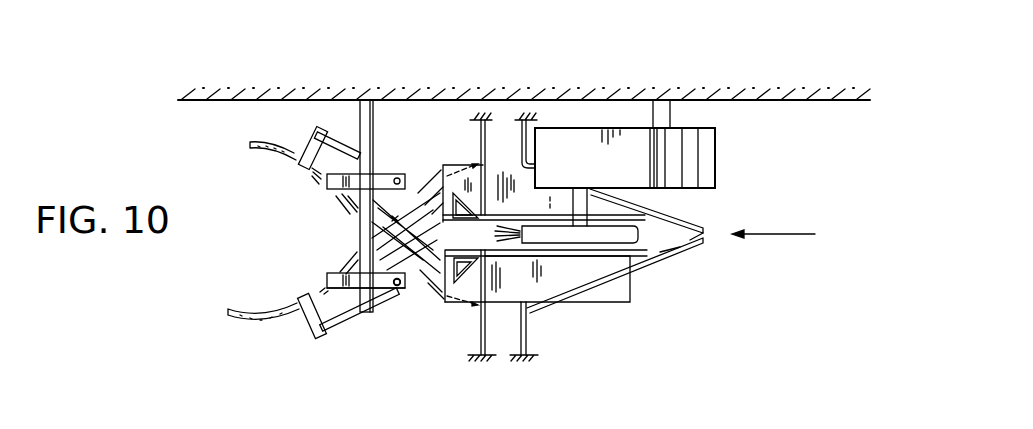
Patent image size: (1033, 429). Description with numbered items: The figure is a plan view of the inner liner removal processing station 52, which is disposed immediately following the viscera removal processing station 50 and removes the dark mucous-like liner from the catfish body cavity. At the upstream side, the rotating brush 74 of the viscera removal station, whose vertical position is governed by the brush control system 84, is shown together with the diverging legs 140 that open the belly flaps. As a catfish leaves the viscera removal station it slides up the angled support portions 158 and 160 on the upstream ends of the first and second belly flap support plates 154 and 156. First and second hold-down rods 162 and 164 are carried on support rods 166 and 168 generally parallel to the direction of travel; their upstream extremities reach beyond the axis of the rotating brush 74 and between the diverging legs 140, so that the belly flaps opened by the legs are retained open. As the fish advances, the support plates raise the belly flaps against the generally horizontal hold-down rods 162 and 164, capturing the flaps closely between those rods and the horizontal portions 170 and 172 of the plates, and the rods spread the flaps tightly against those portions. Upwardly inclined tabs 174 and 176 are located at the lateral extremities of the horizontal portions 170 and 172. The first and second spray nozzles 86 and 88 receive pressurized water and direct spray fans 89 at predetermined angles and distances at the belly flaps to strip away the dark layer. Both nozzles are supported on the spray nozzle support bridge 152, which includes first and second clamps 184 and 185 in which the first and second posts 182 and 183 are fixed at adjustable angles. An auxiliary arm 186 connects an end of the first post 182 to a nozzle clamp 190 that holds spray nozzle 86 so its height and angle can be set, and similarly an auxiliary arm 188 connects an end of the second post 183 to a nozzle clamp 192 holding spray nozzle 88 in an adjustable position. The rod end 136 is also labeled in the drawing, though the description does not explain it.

The viscera removal processing station 50 is at (652, 84).
The inner liner removal processing station 52 is at (418, 85).
The rotating brush 74 is at (663, 218).
The brush control system 84 is at (643, 148).
The first spray nozzle 86 is at (320, 295).
The second spray nozzle 88 is at (313, 174).
The spray fan 89 is at (402, 291).
The upper guide rod 136 is at (697, 245).
The diverging legs 140 is at (667, 253).
The spray nozzle support bridge 152 is at (357, 118).
The first belly flap support plate 154 is at (503, 305).
The second belly flap support plate 156 is at (503, 168).
The angled support portion 158 is at (597, 305).
The angled support portion 160 is at (558, 205).
The first hold-down rod 162 is at (612, 258).
The second hold-down rod 164 is at (627, 176).
The support rod 166 is at (481, 322).
The support rod 168 is at (476, 134).
The horizontal portion 170 is at (513, 296).
The horizontal portion 172 is at (495, 183).
The upwardly inclined tab 174 is at (448, 302).
The upwardly inclined tab 176 is at (442, 165).
The first post 182 is at (386, 292).
The second post 183 is at (420, 168).
The first clamp 184 is at (347, 275).
The second clamp 185 is at (352, 196).
The auxiliary arm 186 is at (347, 316).
The auxiliary arm 188 is at (340, 137).
The nozzle clamp 190 is at (310, 325).
The nozzle clamp 192 is at (310, 135).